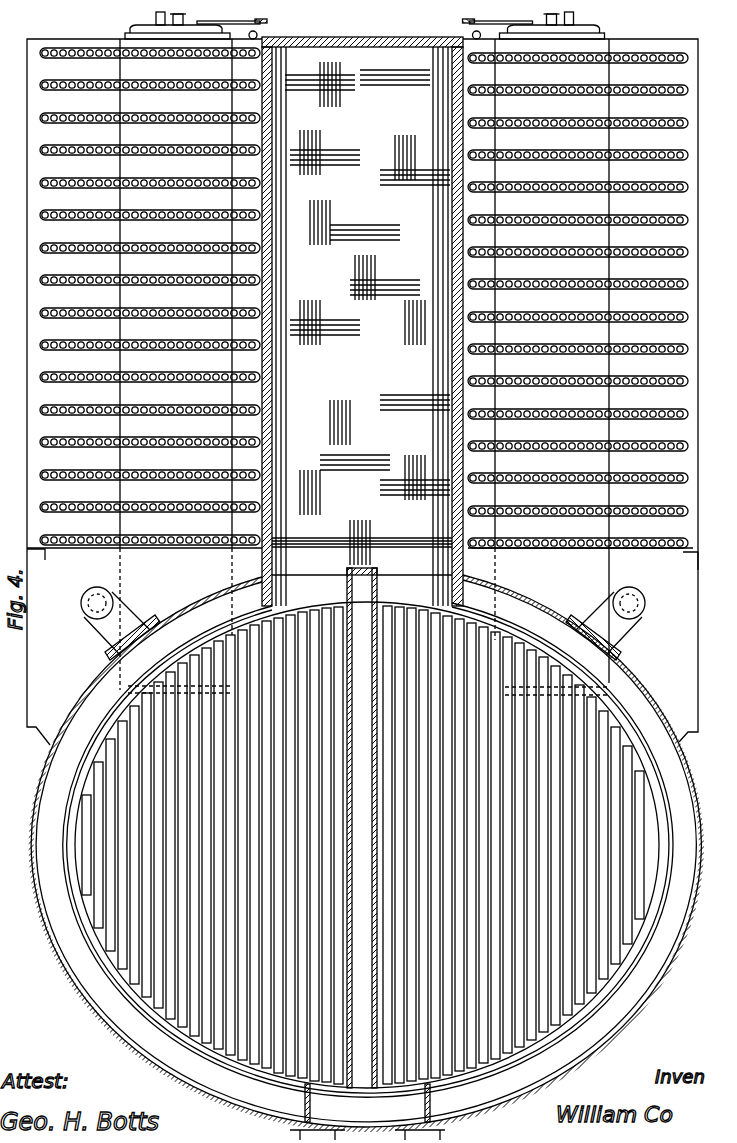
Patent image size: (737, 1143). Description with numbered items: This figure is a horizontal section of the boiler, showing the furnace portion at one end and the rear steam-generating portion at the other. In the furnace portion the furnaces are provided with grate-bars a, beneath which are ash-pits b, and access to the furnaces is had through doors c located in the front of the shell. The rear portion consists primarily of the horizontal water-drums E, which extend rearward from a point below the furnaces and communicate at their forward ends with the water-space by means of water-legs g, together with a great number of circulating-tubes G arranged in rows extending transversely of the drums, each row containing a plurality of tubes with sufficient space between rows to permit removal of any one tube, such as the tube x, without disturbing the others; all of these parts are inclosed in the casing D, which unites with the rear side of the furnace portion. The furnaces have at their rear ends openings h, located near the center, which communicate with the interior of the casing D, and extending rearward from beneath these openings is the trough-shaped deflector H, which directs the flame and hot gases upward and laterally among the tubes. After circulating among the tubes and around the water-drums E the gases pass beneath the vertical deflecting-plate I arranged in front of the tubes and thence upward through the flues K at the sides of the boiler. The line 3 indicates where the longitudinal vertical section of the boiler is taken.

The casing D is at (363, 392).
The water-drums E is at (364, 312).
The tube x is at (364, 367).
The ash-pits b is at (705, 815).
The water-legs g is at (363, 335).
The section line 3 is at (362, 29).
The furnace wall w is at (457, 262).
The trough-shaped deflector H is at (362, 313).
The grate-bars a is at (363, 854).
The openings h is at (367, 831).
The doors c is at (366, 852).
The flues K is at (362, 598).
The vertical deflecting-plate I is at (170, 558).